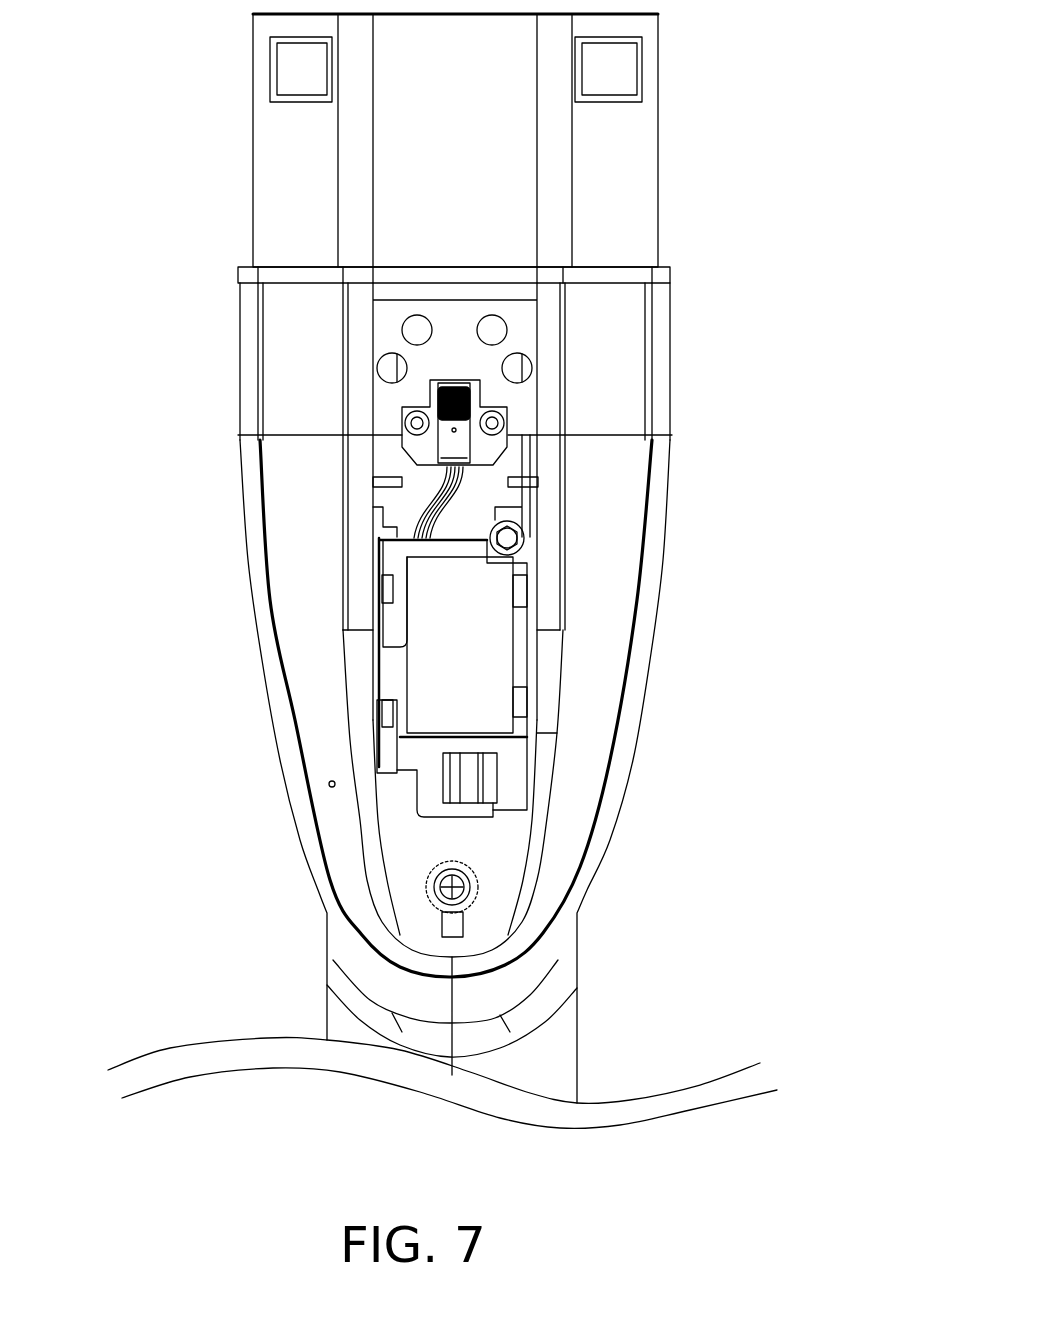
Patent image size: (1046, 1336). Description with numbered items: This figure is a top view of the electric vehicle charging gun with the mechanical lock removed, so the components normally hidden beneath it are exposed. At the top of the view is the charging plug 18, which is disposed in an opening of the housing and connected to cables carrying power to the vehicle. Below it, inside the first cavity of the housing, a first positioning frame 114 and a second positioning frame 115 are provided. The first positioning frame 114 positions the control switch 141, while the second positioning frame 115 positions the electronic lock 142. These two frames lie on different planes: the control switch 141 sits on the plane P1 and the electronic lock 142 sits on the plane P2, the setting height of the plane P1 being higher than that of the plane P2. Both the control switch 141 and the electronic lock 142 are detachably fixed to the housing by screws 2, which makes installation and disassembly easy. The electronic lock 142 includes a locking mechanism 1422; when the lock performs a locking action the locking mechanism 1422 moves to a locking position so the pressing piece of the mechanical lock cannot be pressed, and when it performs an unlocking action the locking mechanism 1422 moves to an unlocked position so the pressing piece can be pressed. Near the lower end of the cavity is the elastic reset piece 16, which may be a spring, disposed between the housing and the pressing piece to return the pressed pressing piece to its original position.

The charging plug 18 is at (625, 187).
The first positioning frame 114 is at (483, 397).
The screw 2 is at (508, 418).
The control switch 141 is at (507, 440).
The plane P1 is at (385, 493).
The electronic lock 142 is at (415, 688).
The second positioning frame 115 is at (545, 673).
The locking mechanism 1422 is at (508, 763).
The plane P2 is at (500, 843).
The elastic reset piece 16 is at (480, 890).